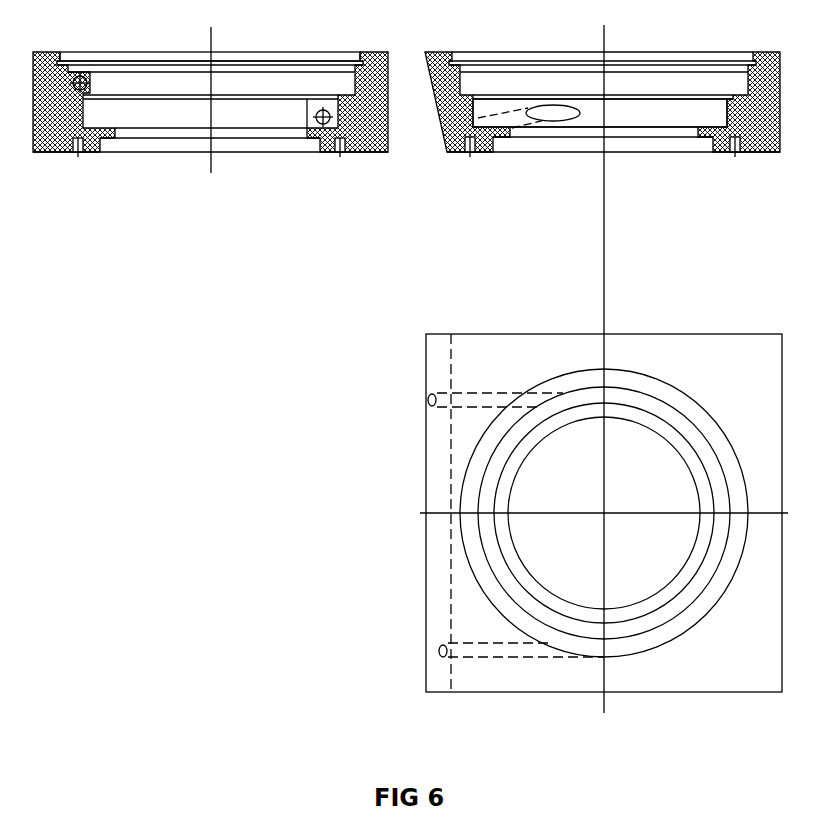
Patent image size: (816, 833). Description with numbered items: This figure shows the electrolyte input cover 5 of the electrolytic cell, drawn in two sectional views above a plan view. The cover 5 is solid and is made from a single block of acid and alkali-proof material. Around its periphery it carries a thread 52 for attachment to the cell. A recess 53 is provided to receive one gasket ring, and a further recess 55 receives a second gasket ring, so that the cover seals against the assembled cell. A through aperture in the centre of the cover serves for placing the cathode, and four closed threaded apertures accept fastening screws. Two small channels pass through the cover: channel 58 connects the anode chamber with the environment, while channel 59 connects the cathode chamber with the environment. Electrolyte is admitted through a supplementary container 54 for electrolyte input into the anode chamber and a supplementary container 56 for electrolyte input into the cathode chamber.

The electrolyte input cover 5 is at (52, 150).
The thread 52 is at (358, 61).
The recess for the gasket ring 53 is at (623, 65).
The supplementary container for electrolyte input in the anode chamber 54 is at (740, 83).
The recess for the gasket ring 55 is at (727, 99).
The supplementary container for electrolyte input in the cathode chamber 56 is at (724, 128).
The channel for connecting anode chamber with the environment 58 is at (82, 88).
The channel for connecting cathode chamber with the environment 59 is at (322, 122).